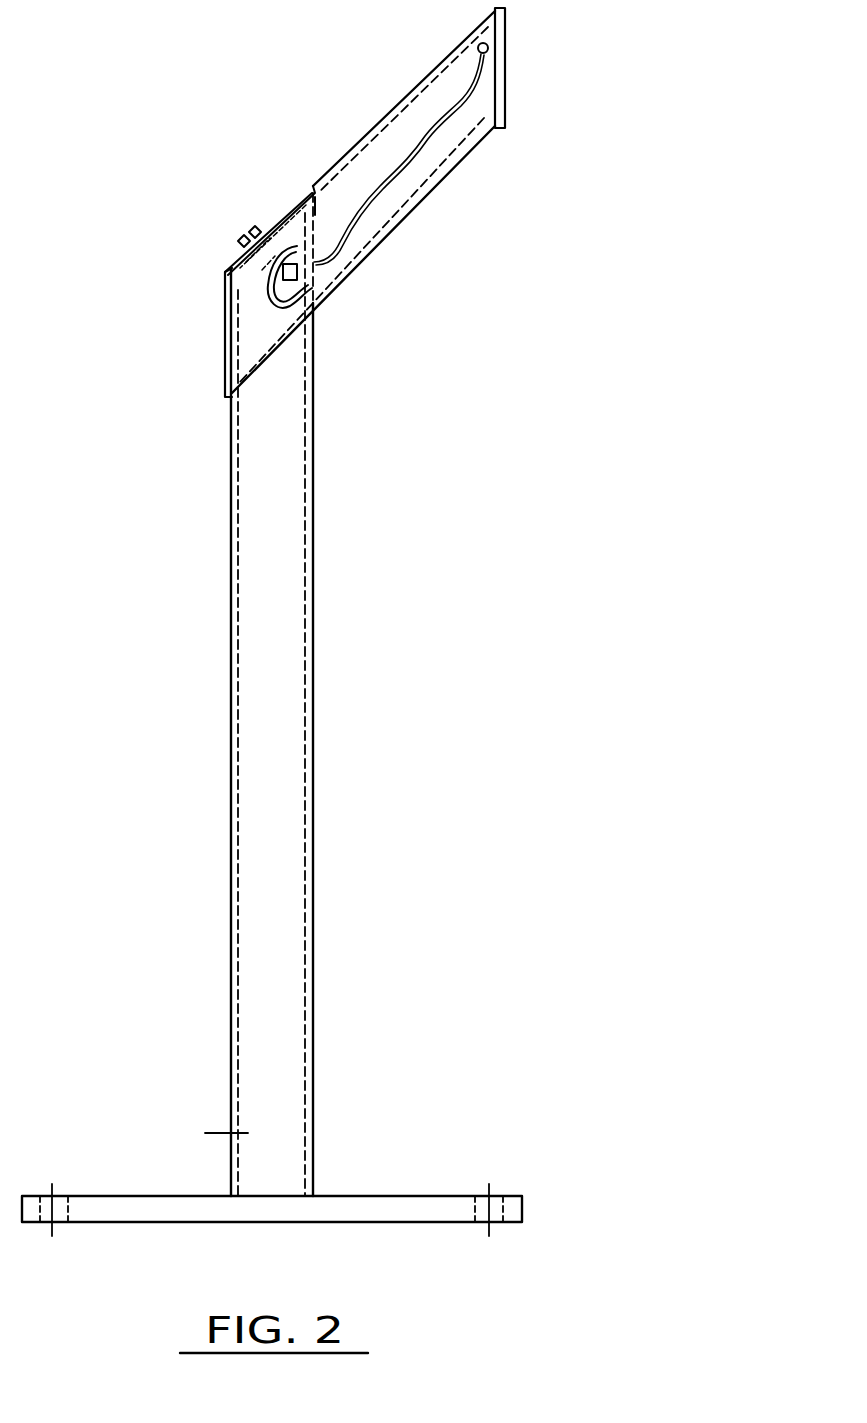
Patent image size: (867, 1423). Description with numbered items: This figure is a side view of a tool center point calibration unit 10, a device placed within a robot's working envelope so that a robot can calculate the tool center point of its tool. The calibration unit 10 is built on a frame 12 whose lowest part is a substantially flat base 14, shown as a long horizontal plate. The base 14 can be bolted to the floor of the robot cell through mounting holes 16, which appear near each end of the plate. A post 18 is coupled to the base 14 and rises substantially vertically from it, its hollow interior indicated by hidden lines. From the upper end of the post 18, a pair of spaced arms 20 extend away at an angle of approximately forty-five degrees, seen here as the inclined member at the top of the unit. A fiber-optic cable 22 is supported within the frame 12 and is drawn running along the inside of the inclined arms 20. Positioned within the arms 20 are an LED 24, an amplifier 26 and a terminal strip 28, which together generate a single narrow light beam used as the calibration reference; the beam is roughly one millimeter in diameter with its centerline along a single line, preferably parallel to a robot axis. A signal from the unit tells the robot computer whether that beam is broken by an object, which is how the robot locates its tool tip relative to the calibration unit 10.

The tool center point calibration unit 10 is at (163, 684).
The frame 12 is at (316, 641).
The base 14 is at (377, 1195).
The mounting holes 16 is at (60, 1196).
The post 18 is at (290, 903).
The arms 20 is at (390, 205).
The fiber-optic cable 22 is at (437, 123).
The LED 24 is at (267, 293).
The amplifier 26 is at (300, 262).
The terminal strip 28 is at (282, 232).